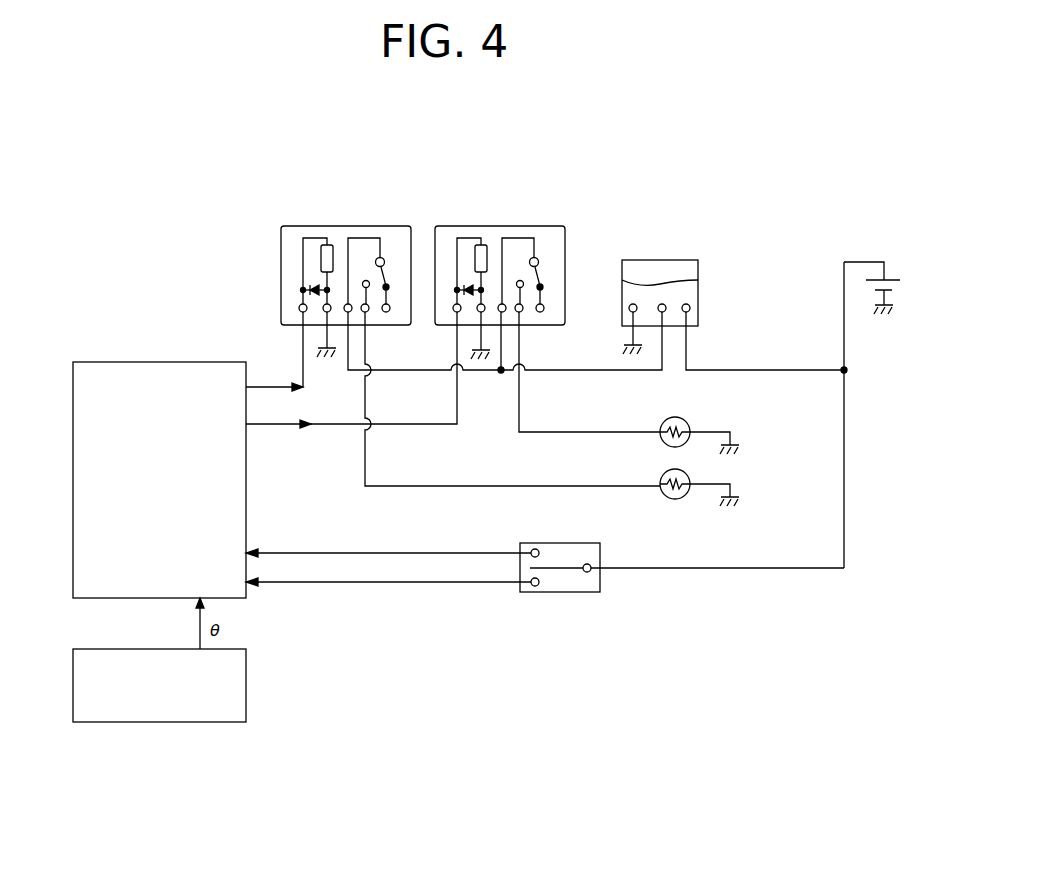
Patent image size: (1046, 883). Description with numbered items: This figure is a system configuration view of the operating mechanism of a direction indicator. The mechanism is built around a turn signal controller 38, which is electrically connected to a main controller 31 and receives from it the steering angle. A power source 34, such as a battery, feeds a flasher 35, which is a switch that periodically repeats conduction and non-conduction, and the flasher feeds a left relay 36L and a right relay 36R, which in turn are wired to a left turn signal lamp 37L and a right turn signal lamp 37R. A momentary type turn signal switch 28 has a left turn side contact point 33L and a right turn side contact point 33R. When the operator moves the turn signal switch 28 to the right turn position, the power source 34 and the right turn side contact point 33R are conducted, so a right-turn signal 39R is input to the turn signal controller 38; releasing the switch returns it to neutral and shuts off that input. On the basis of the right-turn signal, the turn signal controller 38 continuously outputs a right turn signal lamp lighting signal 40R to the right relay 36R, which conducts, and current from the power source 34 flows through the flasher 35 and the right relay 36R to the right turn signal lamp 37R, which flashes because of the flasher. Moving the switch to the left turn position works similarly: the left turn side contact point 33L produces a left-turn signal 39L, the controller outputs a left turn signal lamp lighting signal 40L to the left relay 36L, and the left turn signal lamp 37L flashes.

The turn signal controller 38 is at (205, 362).
The main controller 31 is at (248, 683).
The left relay 36L is at (342, 226).
The right relay 36R is at (498, 226).
The flasher 35 is at (662, 258).
The power source 34 is at (886, 262).
The right turn signal lamp 37R is at (676, 417).
The left turn signal lamp 37L is at (676, 499).
The turn signal switch 28 is at (586, 594).
The left turn side contact point 33L is at (536, 549).
The right turn side contact point 33R is at (535, 586).
The left-turn signal 39L is at (388, 543).
The right-turn signal 39R is at (388, 573).
The left turn signal lamp lighting signal 40L is at (274, 351).
The right turn signal lamp lighting signal 40R is at (351, 370).